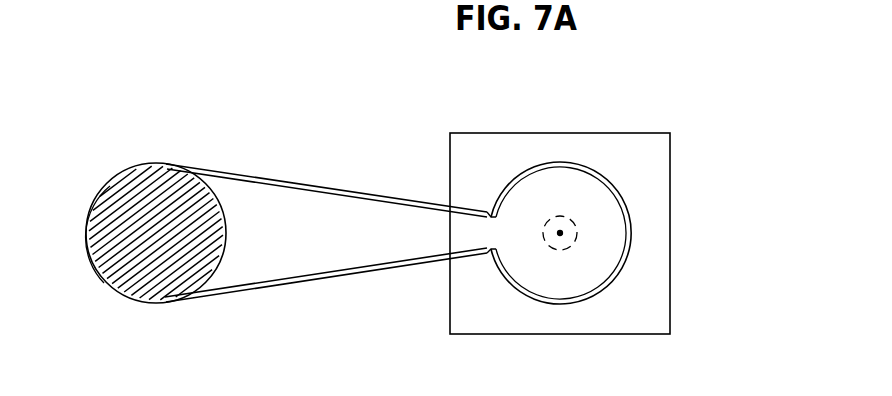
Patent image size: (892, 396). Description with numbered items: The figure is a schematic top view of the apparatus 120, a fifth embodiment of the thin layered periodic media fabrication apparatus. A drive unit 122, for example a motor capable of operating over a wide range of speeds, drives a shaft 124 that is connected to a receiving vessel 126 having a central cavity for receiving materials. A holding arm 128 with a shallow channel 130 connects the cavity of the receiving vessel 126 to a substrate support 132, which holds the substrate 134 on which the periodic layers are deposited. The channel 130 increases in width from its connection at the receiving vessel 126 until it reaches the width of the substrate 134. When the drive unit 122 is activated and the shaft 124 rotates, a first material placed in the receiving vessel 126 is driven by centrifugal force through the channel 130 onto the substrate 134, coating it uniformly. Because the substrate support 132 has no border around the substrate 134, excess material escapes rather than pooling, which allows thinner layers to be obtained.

The apparatus 120 is at (415, 90).
The drive unit 122 is at (670, 215).
The shaft 124 is at (561, 232).
The receiving vessel 126 is at (613, 283).
The holding arm 128 is at (308, 185).
The channel 130 is at (305, 232).
The substrate support 132 is at (137, 298).
The substrate 134 is at (157, 192).